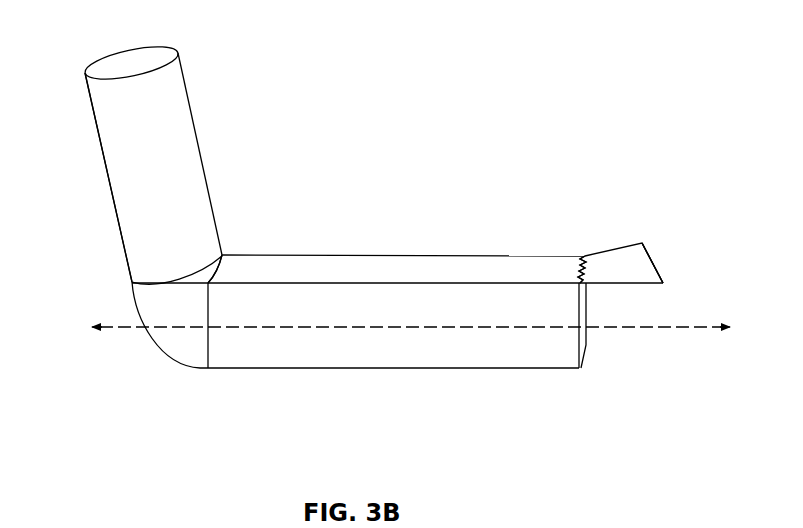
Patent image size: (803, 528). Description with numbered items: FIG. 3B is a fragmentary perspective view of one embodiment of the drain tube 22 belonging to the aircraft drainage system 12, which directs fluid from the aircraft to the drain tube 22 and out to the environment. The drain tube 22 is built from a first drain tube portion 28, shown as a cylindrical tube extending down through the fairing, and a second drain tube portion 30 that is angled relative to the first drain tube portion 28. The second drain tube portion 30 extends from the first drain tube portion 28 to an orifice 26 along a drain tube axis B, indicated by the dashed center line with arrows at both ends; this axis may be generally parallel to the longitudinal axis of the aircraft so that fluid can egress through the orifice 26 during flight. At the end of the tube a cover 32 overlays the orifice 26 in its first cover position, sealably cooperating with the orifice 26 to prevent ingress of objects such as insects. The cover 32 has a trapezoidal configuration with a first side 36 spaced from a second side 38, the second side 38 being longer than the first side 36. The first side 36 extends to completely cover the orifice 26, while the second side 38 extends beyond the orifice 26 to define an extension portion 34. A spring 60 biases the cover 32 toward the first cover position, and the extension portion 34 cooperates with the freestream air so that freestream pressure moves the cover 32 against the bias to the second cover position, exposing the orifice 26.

The drainage system 12 is at (235, 94).
The drain tube 22 is at (237, 231).
The orifice 26 is at (587, 342).
The first drain tube portion 28 is at (101, 147).
The second drain tube portion 30 is at (282, 363).
The cover 32 is at (617, 239).
The extension portion 34 is at (645, 241).
The first side 36 is at (579, 263).
The second side 38 is at (655, 263).
The spring 60 is at (586, 255).
The drain tube axis B is at (693, 329).